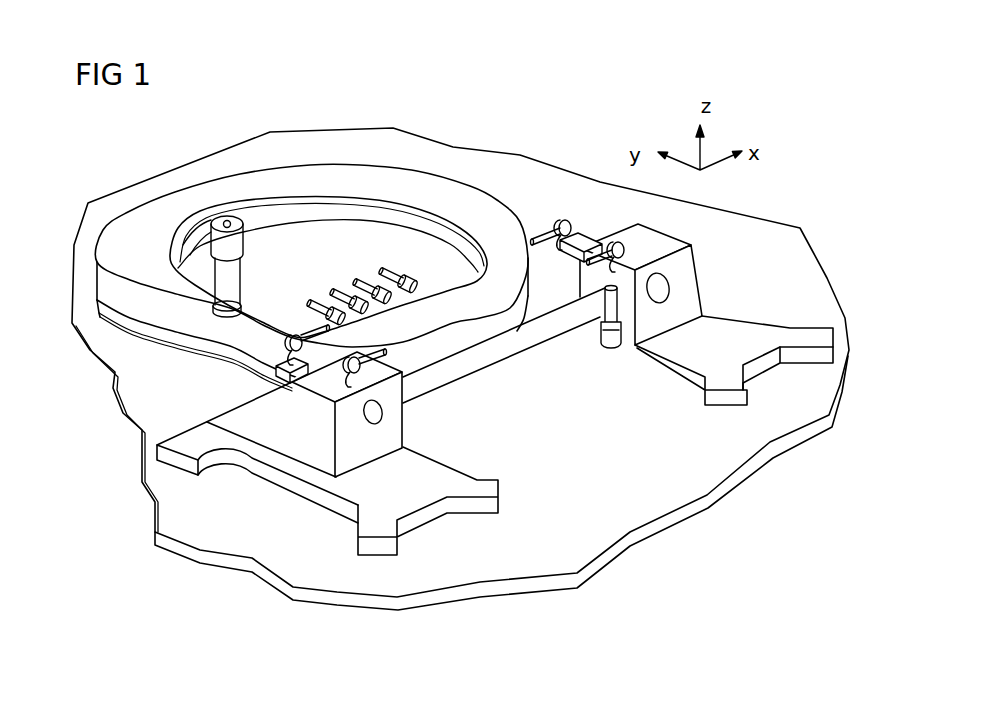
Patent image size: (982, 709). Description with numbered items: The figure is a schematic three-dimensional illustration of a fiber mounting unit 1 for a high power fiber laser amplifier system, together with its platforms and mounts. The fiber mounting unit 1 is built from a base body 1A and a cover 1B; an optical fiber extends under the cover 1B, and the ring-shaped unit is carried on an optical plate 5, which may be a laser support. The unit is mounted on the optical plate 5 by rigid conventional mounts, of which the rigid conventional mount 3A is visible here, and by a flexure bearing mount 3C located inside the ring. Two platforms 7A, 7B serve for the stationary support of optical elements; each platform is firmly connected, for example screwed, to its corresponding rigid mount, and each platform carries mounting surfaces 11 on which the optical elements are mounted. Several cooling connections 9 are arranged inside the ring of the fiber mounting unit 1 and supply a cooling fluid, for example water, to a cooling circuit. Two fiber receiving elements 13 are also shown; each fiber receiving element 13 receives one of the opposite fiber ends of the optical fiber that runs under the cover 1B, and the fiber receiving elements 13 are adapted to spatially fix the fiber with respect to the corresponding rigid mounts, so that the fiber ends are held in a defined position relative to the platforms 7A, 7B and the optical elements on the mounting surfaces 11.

The fiber mounting unit 1 is at (409, 168).
The base body 1A is at (177, 350).
The cover 1B is at (177, 200).
The rigid conventional mount 3A is at (605, 345).
The flexure bearing mount 3C is at (243, 283).
The optical plate 5 is at (737, 450).
The platform 7A is at (733, 318).
The platform 7B is at (283, 470).
The cooling connections 9 is at (378, 272).
The mounting surfaces 11 is at (810, 338).
The fiber receiving elements 13 is at (583, 240).